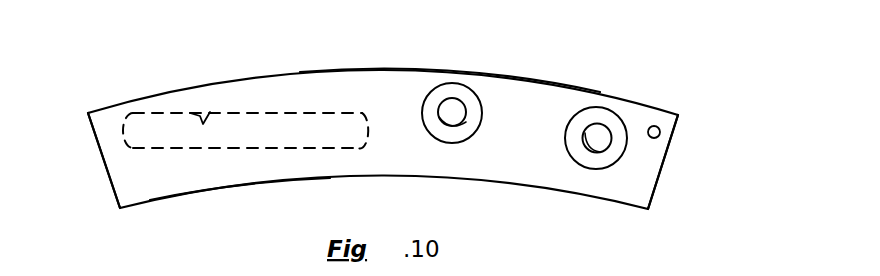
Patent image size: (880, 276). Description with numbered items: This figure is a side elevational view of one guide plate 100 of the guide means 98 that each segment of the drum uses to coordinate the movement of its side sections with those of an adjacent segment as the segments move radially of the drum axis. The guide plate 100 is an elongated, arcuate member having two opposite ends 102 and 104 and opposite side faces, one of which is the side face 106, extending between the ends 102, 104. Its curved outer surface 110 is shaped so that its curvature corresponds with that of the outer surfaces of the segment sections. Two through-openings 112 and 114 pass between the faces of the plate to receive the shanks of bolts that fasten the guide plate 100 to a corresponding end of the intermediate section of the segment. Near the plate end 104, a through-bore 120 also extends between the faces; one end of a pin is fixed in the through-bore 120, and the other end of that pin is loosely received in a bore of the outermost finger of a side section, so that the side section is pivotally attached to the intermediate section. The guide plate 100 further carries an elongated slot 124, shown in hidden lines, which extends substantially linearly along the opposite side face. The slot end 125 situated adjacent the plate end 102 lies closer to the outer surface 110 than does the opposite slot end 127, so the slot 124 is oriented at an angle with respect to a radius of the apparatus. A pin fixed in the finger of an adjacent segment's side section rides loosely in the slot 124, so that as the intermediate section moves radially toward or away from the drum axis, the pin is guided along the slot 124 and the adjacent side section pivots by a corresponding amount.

The guide means 98 is at (447, 66).
The guide plate 100 is at (357, 70).
The plate end 102 is at (103, 165).
The plate end 104 is at (660, 183).
The side face 106 is at (232, 175).
The outer surface 110 is at (523, 80).
The through-opening 112 is at (437, 114).
The through-opening 114 is at (567, 133).
The through-bore 120 is at (662, 130).
The elongated slot 124 is at (213, 112).
The slot end 125 is at (118, 120).
The slot end 127 is at (372, 112).